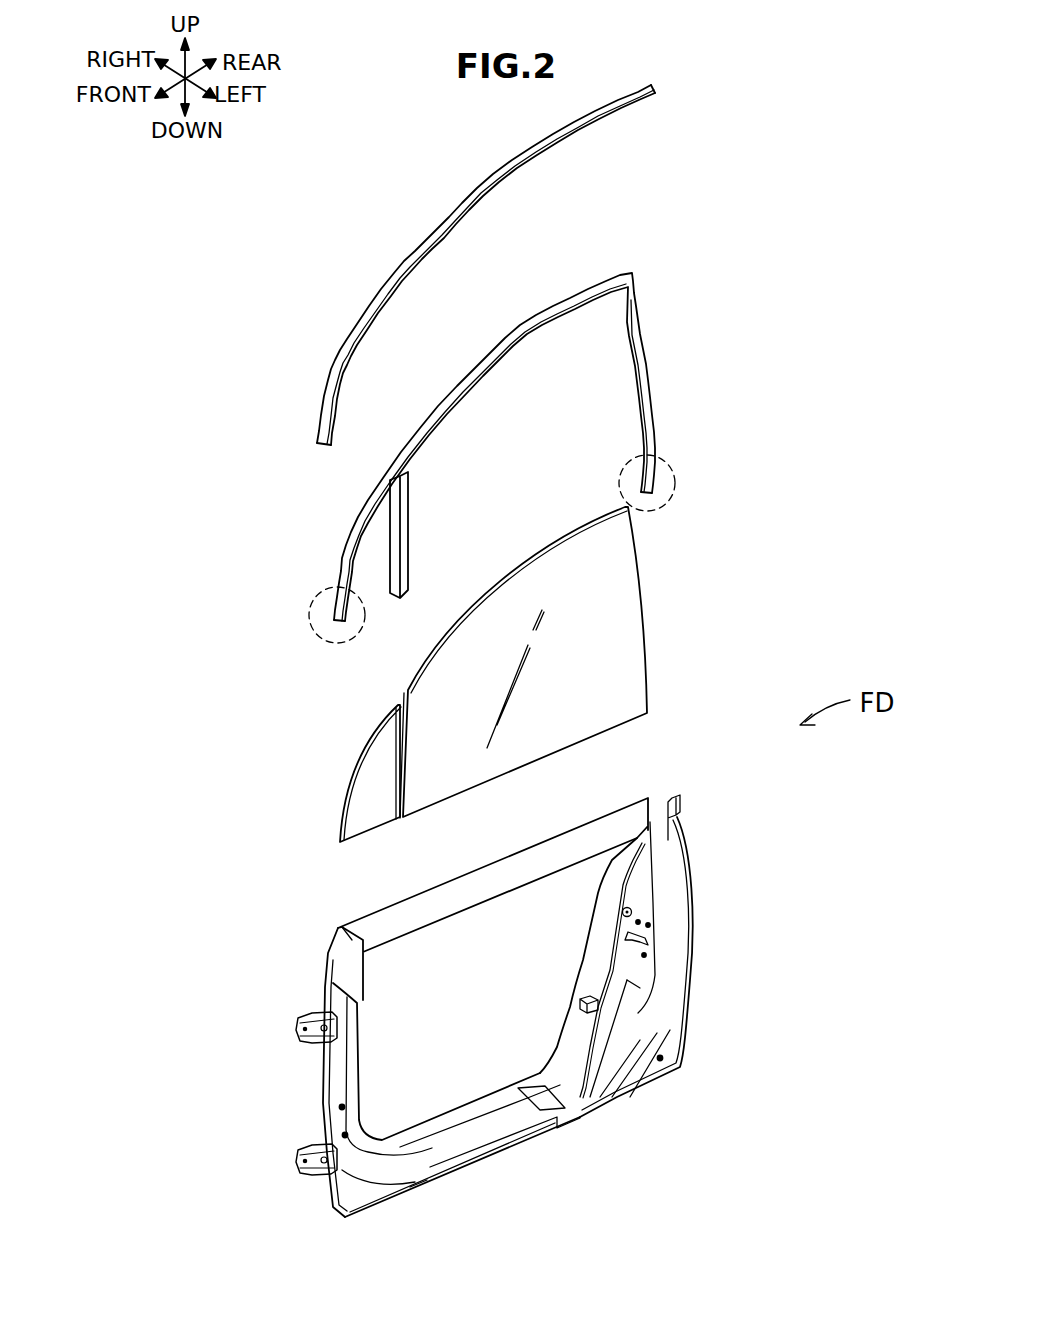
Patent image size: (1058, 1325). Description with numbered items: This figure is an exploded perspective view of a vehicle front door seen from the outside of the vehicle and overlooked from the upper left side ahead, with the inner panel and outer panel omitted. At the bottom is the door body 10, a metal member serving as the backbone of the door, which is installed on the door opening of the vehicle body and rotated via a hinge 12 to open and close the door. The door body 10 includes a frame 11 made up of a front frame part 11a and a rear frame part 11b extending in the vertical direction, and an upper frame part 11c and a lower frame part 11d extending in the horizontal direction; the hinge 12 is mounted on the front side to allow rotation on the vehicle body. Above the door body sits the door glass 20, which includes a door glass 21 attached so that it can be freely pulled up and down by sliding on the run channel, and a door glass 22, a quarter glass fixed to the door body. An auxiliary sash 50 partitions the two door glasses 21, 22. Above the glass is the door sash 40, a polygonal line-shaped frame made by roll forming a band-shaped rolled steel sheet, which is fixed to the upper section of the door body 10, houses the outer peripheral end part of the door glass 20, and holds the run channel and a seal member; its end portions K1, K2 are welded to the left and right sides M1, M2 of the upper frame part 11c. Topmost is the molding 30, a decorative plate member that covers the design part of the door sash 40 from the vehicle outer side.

The door body 10 is at (510, 976).
The frame 11 is at (515, 976).
The front frame part 11a is at (327, 1095).
The rear frame part 11b is at (693, 955).
The upper frame part 11c is at (512, 877).
The lower frame part 11d is at (490, 1130).
The hinge 12 is at (298, 1030).
The door glass 20 is at (518, 674).
The door glass 21 is at (627, 708).
The door glass (quarter glass) 22 is at (378, 780).
The molding 30 is at (678, 100).
The door sash 40 is at (660, 382).
The auxiliary sash 50 is at (408, 538).
The end portion K1 is at (313, 628).
The end portion K2 is at (676, 490).
The left side of the upper frame part M1 is at (347, 943).
The right side of the upper frame part M2 is at (668, 800).